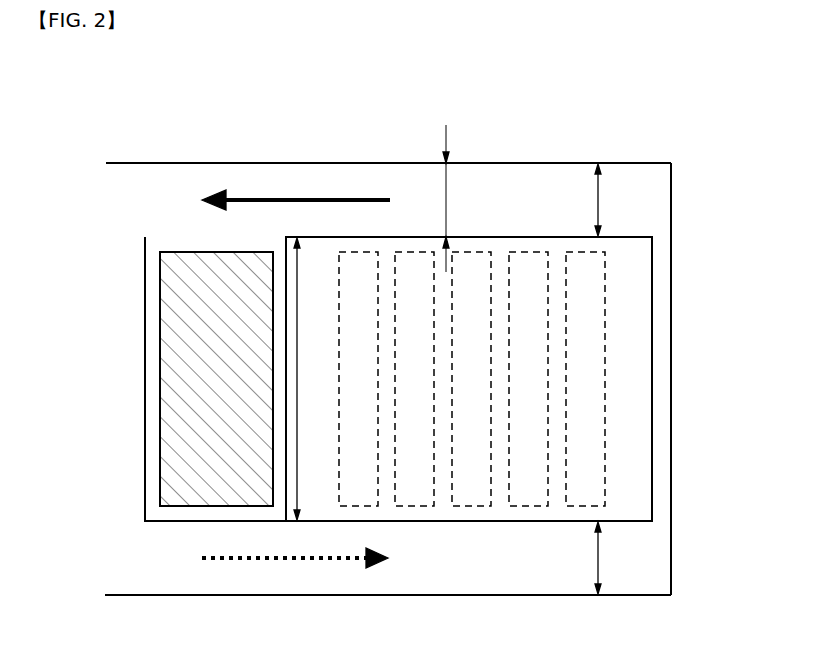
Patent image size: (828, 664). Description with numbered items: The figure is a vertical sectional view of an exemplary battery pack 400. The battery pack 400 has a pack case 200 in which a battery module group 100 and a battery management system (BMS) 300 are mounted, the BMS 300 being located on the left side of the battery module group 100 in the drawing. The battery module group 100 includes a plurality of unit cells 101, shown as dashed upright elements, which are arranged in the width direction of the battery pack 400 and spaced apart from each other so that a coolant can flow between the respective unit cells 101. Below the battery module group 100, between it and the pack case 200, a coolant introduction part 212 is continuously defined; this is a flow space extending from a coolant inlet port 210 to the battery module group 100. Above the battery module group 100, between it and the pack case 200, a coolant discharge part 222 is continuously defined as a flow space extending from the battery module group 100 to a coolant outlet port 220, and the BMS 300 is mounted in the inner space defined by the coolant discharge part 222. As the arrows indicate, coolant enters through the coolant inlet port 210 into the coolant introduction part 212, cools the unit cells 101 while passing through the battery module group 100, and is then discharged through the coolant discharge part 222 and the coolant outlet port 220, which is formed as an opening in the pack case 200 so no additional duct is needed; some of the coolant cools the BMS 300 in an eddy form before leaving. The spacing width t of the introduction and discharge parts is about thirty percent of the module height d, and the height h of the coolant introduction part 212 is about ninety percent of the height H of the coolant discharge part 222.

The battery pack 400 is at (89, 155).
The coolant discharge part 222 is at (512, 198).
The coolant introduction part 212 is at (512, 556).
The coolant outlet port 220 is at (160, 201).
The coolant inlet port 210 is at (160, 555).
The pack case 200 is at (690, 374).
The battery module group 100 is at (670, 326).
The battery management system (BMS) 300 is at (154, 373).
The unit cells 101 is at (434, 483).